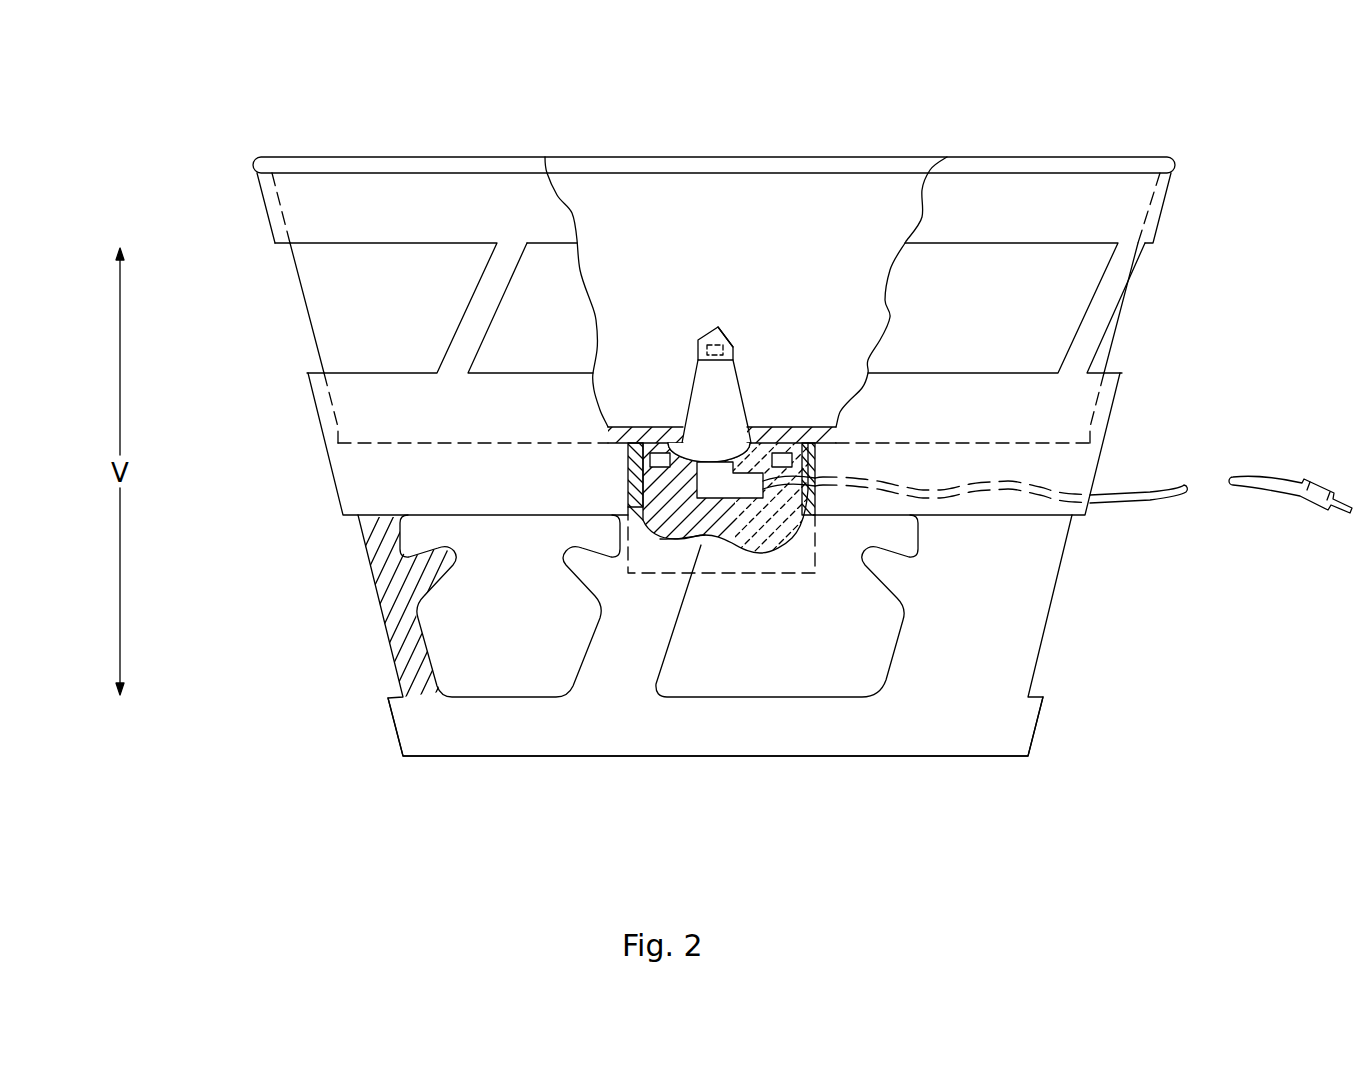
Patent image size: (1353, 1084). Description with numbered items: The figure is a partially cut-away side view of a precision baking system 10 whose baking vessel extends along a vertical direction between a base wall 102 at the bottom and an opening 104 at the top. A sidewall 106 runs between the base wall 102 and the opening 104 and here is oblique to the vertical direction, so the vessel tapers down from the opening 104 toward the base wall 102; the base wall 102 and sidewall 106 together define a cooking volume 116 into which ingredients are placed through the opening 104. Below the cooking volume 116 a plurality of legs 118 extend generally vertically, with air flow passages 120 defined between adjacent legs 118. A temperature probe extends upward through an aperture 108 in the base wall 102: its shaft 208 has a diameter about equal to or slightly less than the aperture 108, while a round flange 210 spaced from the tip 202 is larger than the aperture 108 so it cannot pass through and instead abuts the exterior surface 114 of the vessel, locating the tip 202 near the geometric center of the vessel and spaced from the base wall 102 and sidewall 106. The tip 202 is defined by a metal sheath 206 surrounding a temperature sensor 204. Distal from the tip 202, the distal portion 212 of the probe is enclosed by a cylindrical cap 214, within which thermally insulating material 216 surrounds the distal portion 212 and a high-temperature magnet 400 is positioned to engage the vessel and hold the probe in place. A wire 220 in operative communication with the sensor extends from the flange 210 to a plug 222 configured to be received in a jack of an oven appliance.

The precision baking system 10 is at (158, 130).
The base wall 102 is at (780, 427).
The opening 104 is at (783, 193).
The sidewall 106 is at (323, 303).
The aperture 108 is at (747, 427).
The exterior surface 114 is at (986, 318).
The cooking volume 116 is at (677, 308).
The legs 118 is at (407, 673).
The air flow passages 120 is at (783, 682).
The tip 202 is at (718, 327).
The temperature sensor 204 is at (733, 345).
The metal sheath 206 is at (705, 348).
The shaft 208 is at (710, 397).
The flange 210 is at (727, 450).
The distal portion 212 is at (728, 487).
The cylindrical cap 214 is at (730, 563).
The thermally insulating material 216 is at (677, 517).
The wire 220 is at (1144, 498).
The plug 222 is at (1318, 480).
The high-temperature magnet 400 is at (657, 462).